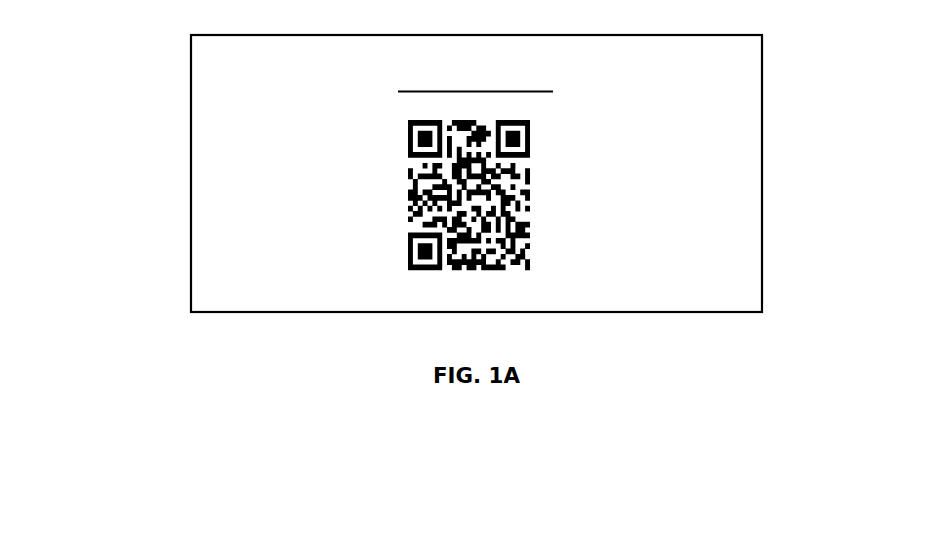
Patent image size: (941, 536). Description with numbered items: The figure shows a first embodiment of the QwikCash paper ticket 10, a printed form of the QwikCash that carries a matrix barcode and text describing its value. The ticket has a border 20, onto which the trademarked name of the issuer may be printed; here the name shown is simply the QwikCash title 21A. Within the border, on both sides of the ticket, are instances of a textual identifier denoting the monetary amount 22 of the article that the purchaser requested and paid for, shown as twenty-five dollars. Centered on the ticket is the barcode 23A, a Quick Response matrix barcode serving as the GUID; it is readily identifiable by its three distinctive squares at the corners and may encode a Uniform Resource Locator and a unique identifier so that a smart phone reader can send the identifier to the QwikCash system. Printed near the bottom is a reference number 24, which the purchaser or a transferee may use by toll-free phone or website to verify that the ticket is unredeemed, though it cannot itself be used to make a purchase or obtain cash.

The QwikCash paper ticket 10 is at (491, 176).
The border 20 is at (766, 222).
The brand name / logo text 21A is at (378, 77).
The monetary amount 22 is at (239, 203).
The barcode 23A is at (400, 137).
The reference number 24 is at (209, 283).